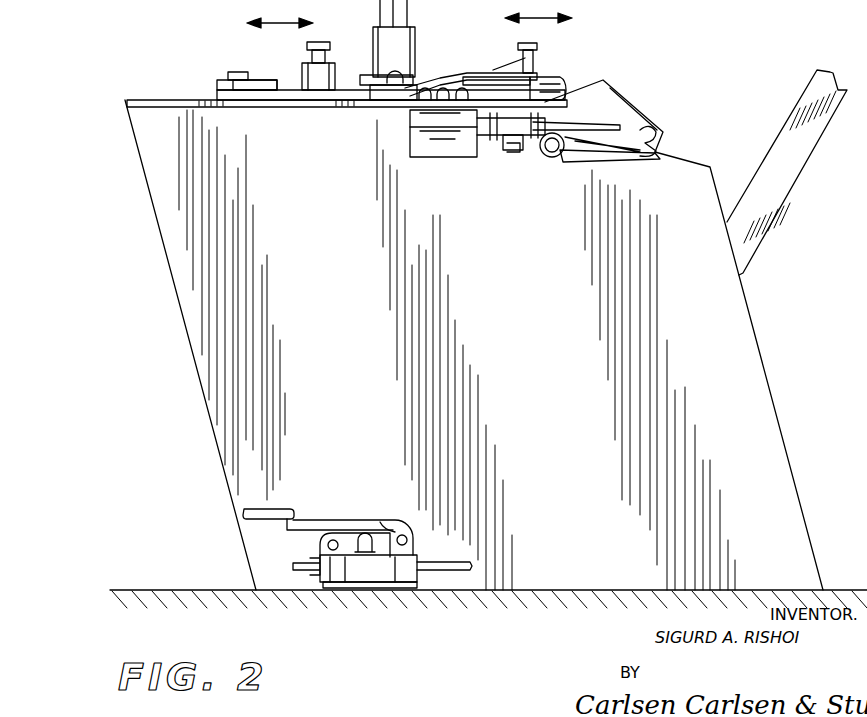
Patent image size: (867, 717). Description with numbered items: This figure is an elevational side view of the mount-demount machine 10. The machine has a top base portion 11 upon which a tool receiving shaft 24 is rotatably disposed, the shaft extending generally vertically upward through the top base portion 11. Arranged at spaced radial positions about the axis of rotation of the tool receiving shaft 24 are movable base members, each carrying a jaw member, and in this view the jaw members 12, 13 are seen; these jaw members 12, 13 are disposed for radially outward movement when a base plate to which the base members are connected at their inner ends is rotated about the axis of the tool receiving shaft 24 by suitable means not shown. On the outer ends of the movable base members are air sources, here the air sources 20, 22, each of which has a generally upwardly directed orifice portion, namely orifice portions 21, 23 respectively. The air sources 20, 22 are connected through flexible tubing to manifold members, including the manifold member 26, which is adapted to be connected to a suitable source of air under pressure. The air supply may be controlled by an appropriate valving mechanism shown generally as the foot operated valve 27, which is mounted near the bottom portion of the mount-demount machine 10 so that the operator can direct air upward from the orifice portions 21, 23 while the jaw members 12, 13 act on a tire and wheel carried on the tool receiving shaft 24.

The mount-demount machine 10 is at (532, 311).
The top base portion 11 is at (155, 100).
The jaw member 12 is at (307, 53).
The jaw member 13 is at (527, 58).
The air source 20 is at (572, 83).
The orifice portion 21 is at (552, 88).
The air source 22 is at (315, 108).
The orifice portion 23 is at (248, 80).
The tool receiving shaft 24 is at (413, 40).
The manifold member 26 is at (443, 150).
The foot operated valve 27 is at (360, 520).